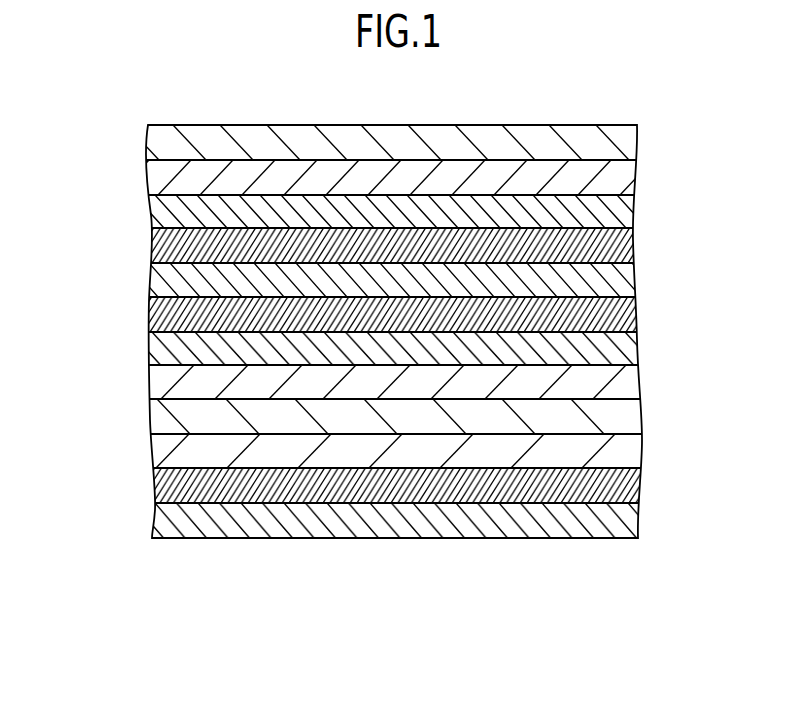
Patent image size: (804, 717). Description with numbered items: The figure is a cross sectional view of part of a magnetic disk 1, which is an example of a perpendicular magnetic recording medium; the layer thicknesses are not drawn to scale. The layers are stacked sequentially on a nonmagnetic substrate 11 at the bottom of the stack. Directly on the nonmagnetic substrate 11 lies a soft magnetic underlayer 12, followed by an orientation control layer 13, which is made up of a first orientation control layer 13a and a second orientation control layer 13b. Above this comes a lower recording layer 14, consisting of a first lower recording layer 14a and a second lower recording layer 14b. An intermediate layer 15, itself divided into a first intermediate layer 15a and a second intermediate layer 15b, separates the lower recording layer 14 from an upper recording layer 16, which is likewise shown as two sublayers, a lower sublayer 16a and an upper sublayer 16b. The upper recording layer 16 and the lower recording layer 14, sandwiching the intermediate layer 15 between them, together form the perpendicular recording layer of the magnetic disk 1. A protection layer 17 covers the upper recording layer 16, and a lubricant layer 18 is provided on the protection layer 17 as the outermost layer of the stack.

The magnetic disk 1 is at (610, 77).
The nonmagnetic substrate 11 is at (625, 522).
The soft magnetic underlayer 12 is at (627, 487).
The orientation control layer 13 is at (338, 433).
The first orientation control layer 13a is at (165, 450).
The second orientation control layer 13b is at (165, 415).
The lower recording layer 14 is at (451, 366).
The first lower recording layer 14a is at (623, 383).
The second lower recording layer 14b is at (623, 350).
The intermediate layer 15 is at (451, 297).
The first intermediate layer 15a is at (623, 318).
The second intermediate layer 15b is at (623, 282).
The upper recording layer 16 is at (451, 229).
The lower sublayer of third composite layer 16a is at (625, 247).
The upper sublayer of third composite layer 16b is at (623, 215).
The protection layer 17 is at (622, 180).
The lubricant layer 18 is at (625, 143).